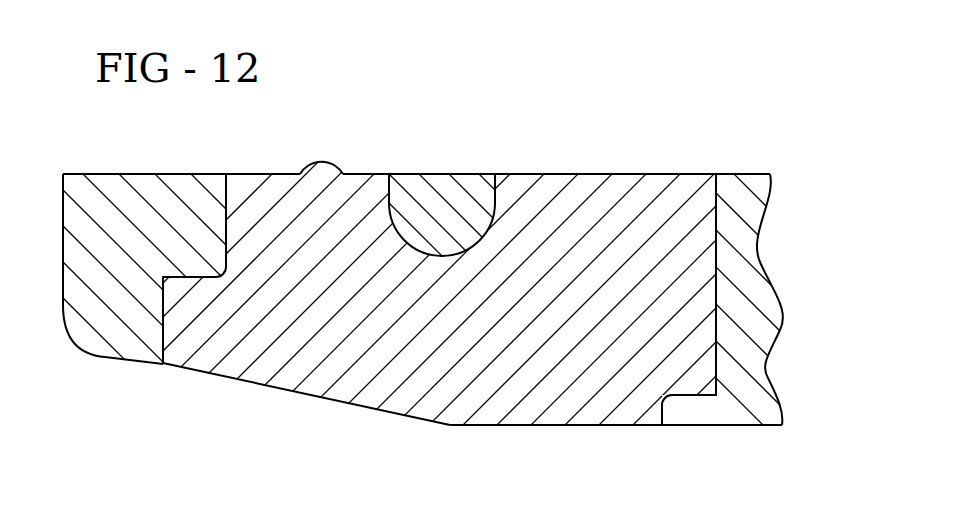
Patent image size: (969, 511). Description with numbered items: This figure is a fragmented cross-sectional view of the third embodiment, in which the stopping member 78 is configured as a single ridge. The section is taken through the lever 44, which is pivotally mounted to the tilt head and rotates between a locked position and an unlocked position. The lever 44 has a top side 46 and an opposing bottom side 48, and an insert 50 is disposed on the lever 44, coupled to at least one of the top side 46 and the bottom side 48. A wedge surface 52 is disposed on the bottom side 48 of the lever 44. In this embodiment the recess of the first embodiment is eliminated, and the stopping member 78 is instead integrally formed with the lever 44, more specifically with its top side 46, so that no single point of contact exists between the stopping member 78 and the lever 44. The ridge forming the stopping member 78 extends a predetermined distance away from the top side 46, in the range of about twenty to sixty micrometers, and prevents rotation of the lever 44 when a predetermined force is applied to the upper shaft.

The lever 44 is at (743, 241).
The top side 46 is at (364, 174).
The bottom side 48 is at (513, 425).
The insert 50 is at (265, 192).
The wedge surface 52 is at (283, 390).
The stopping member 78 is at (322, 163).